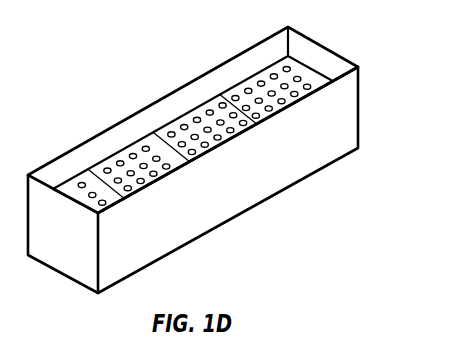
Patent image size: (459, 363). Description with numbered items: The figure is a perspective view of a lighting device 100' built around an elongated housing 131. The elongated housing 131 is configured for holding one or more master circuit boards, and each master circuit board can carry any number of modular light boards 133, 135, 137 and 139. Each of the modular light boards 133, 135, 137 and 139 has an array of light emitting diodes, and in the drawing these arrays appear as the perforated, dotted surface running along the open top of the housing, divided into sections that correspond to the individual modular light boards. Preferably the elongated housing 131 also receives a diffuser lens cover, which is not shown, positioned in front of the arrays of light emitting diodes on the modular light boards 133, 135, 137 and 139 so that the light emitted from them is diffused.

The lighting device 100' is at (193, 153).
The elongated housing 131 is at (203, 75).
The modular light board 133 is at (300, 67).
The modular light board 135 is at (226, 128).
The modular light board 137 is at (155, 177).
The modular light board 139 is at (73, 177).